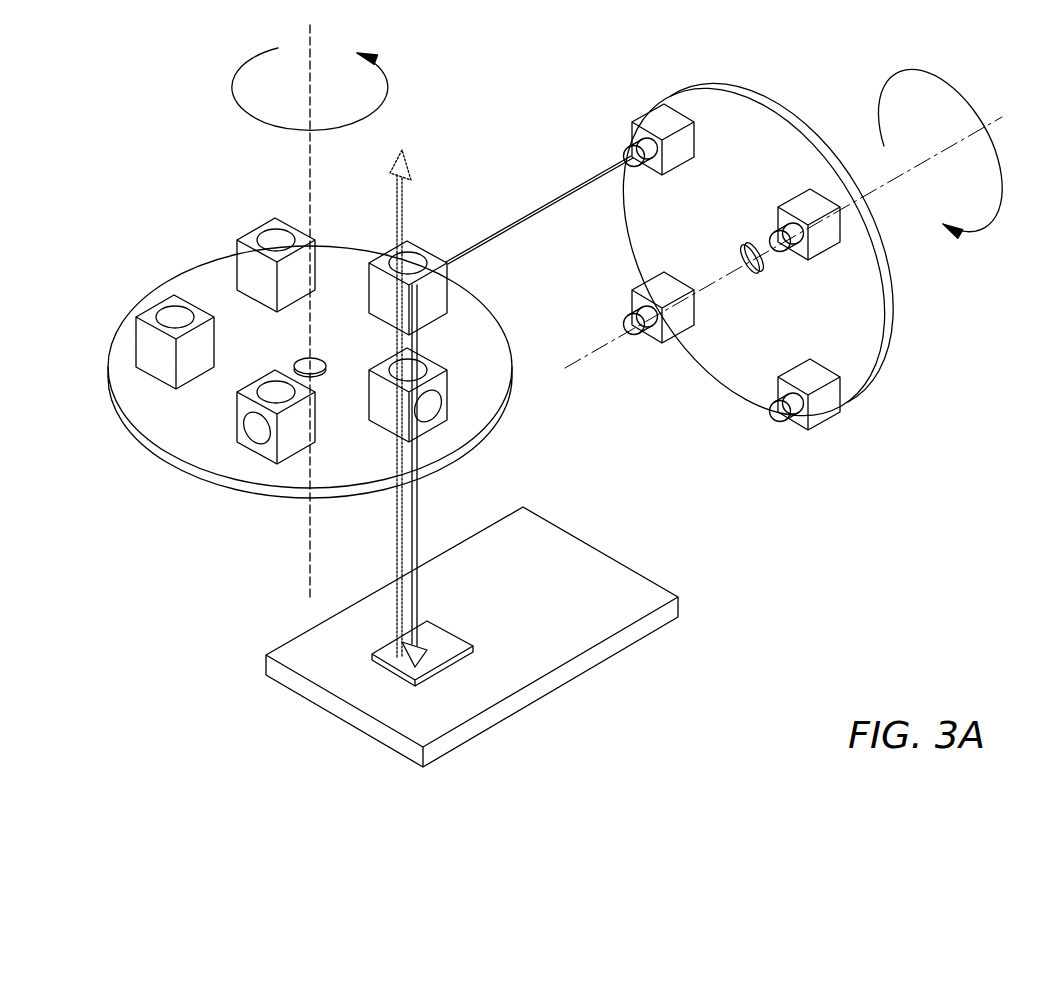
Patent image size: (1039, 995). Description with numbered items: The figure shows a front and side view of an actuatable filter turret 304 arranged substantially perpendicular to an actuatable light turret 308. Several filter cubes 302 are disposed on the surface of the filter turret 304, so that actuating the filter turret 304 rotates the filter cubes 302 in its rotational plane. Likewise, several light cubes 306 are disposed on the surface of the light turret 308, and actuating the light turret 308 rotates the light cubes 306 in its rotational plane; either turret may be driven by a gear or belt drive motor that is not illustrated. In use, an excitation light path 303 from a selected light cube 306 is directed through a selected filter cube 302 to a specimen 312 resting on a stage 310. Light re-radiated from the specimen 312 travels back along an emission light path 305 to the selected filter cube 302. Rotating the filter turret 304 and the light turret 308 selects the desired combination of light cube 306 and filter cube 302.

The filter cube 302 is at (158, 303).
The excitation light path 303 is at (563, 195).
The filter turret 304 is at (157, 440).
The emission light path 305 is at (400, 227).
The light cube 306 is at (645, 113).
The light turret 308 is at (880, 327).
The stage 310 is at (500, 713).
The specimen 312 is at (438, 640).